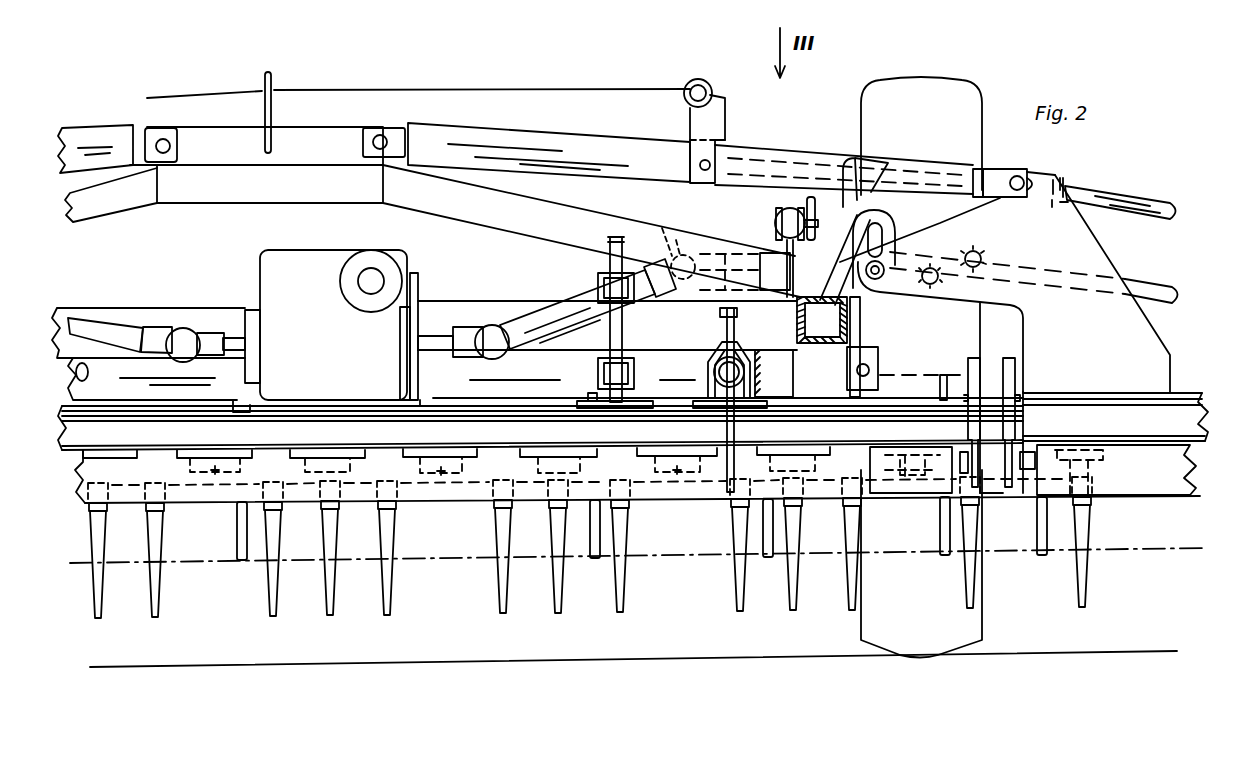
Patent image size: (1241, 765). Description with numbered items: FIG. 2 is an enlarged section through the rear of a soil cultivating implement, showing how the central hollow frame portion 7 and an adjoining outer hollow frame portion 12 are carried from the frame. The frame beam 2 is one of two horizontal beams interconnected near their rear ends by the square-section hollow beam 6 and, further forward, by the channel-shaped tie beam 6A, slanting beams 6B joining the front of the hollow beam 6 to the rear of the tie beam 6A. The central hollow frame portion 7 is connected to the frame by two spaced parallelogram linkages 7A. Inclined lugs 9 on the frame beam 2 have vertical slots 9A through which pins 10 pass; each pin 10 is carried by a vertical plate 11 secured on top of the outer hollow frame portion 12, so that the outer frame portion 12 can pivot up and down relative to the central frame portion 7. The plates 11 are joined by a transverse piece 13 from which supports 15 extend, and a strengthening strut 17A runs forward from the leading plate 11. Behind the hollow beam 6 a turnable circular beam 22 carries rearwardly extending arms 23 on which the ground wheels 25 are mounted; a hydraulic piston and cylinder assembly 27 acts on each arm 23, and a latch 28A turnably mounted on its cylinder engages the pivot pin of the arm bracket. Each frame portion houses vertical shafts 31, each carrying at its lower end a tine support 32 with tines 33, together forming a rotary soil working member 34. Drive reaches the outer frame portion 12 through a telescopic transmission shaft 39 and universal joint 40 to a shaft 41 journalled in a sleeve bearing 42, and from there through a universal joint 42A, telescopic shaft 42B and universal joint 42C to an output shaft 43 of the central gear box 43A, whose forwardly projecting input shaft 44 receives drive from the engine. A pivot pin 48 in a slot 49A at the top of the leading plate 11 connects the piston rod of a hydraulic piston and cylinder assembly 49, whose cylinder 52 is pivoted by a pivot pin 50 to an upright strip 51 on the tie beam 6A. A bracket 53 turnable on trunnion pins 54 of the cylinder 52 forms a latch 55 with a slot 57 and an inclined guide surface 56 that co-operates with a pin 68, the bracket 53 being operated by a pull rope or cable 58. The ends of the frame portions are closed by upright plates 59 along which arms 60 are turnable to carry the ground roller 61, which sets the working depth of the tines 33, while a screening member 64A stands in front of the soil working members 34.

The frame beam 2 is at (790, 324).
The hollow beam 6 is at (440, 303).
The tie beam 6A is at (213, 196).
The slanting beam 6B is at (607, 328).
The central hollow frame portion 7 is at (298, 420).
The parallelogram linkage 7A is at (600, 255).
The lug 9 is at (854, 225).
The slot 9A is at (884, 233).
The pin 10 is at (880, 288).
The plate 11 is at (1108, 252).
The outer hollow frame portion 12 is at (1190, 393).
The transverse piece 13 is at (1072, 181).
The support 15 is at (1163, 200).
The strengthening strut 17A is at (933, 286).
The horizontal beam 22 is at (878, 360).
The arm 23 is at (793, 370).
The ground wheel 25 is at (901, 83).
The hydraulic piston and cylinder assembly 27 is at (775, 222).
The latch 28A is at (783, 206).
The shaft 31 is at (447, 447).
The tine support 32 is at (470, 506).
The tine 33 is at (158, 600).
The rotary soil working member 34 is at (494, 588).
The telescopic transmission shaft 39 is at (1171, 282).
The universal joint 40 is at (912, 253).
The shaft 41 is at (822, 320).
The sleeve bearing 42 is at (728, 300).
The universal joint 42A is at (675, 256).
The telescopic shaft 42B is at (550, 312).
The universal joint 42C is at (490, 325).
The output shaft 43 is at (247, 345).
The central gear box 43A is at (260, 268).
The rotary input shaft 44 is at (372, 268).
The pivot pin 48 is at (1015, 176).
The hydraulic piston and cylinder assembly 49 is at (79, 121).
The slot 49A is at (1050, 185).
The pivot pin 50 is at (381, 135).
The upright strip 51 is at (337, 108).
The cylinder 52 is at (485, 130).
The bracket 53 is at (726, 112).
The trunnion pin 54 is at (699, 165).
The latch 55 is at (805, 150).
The inclined guide surface 56 is at (892, 190).
The slot 57 is at (868, 160).
The pull member 58 is at (205, 93).
The upright plate 59 is at (966, 372).
The arm 60 is at (992, 352).
The ground roller 61 is at (144, 577).
The screening member 64A is at (1135, 463).
The pin 68 is at (981, 253).